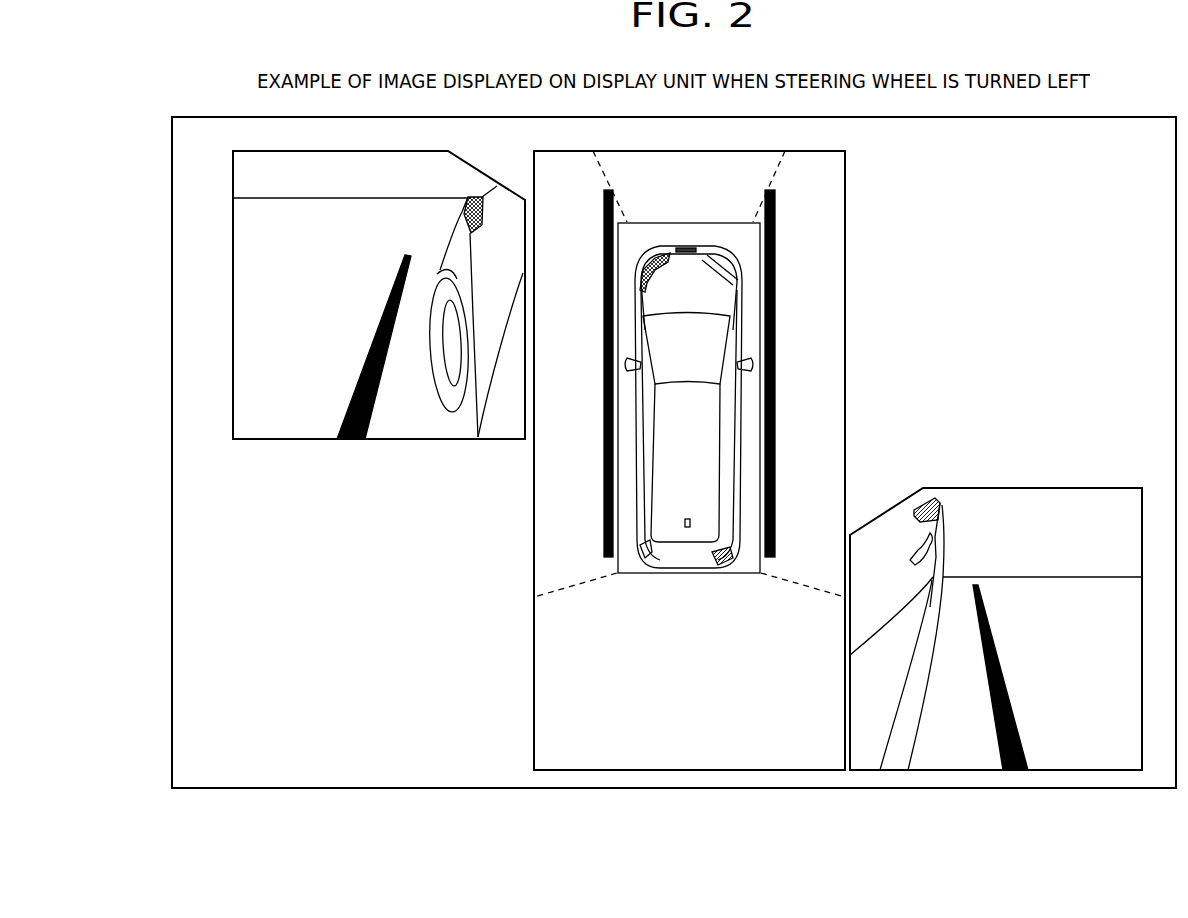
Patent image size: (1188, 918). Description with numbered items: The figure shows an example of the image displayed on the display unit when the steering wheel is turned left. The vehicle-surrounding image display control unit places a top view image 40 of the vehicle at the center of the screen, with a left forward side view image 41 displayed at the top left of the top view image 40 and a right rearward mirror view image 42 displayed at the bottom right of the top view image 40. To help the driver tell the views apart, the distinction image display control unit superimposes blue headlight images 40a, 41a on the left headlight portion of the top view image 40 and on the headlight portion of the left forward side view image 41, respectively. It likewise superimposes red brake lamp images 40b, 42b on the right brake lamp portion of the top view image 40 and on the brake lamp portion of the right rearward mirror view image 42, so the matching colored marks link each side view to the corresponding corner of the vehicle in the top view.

The top view image 40 is at (845, 250).
The blue headlight image 40a is at (650, 262).
The red brake lamp image 40b is at (722, 566).
The left forward side view image 41 is at (417, 440).
The blue headlight image 41a is at (476, 188).
The right rearward mirror view image 42 is at (1040, 488).
The red brake lamp image 42b is at (947, 498).